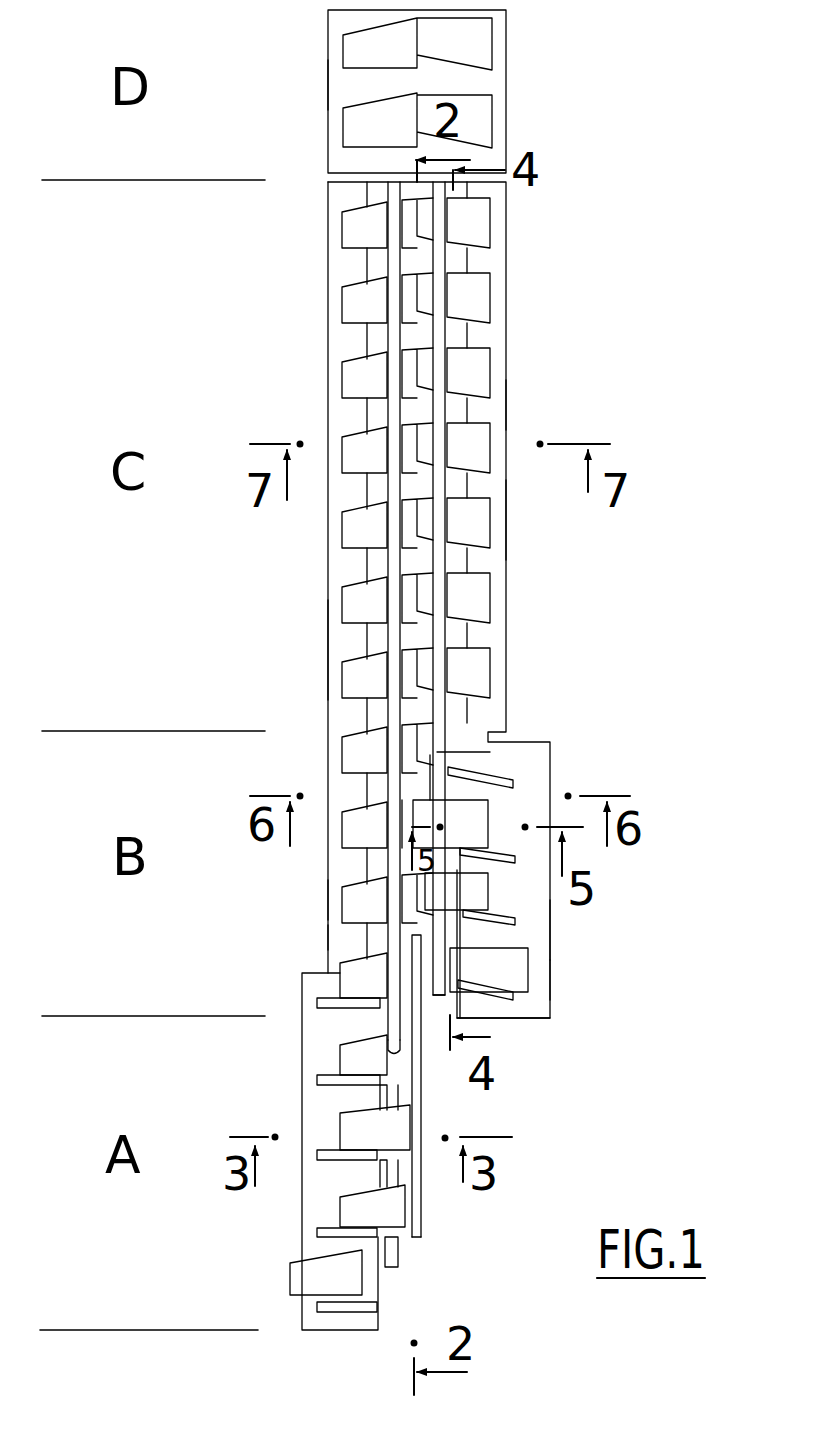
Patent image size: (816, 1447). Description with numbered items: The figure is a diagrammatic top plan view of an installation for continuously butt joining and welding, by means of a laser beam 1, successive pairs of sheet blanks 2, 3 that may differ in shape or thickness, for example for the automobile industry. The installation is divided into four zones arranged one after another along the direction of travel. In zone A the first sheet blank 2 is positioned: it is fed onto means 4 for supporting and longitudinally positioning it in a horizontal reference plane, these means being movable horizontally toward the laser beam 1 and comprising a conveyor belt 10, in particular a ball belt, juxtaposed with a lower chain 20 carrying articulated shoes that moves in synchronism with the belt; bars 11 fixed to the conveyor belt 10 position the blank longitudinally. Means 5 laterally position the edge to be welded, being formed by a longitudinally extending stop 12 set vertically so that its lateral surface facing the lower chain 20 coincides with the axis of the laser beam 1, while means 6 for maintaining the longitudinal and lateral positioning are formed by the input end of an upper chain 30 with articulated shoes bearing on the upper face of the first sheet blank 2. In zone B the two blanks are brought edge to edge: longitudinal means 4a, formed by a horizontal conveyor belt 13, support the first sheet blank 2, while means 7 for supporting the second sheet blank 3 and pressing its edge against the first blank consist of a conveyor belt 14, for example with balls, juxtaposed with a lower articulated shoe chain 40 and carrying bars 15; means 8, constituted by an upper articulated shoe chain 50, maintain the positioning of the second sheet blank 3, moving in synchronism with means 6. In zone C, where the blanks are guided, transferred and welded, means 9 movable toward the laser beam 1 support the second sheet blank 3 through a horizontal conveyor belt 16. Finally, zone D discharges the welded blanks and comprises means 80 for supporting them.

The laser beam 1 is at (415, 370).
The first sheet blank 2 is at (345, 1128).
The second sheet blank 3 is at (470, 900).
The means for supporting and longitudinally positioning the first sheet blank 4 is at (326, 554).
The longitudinal means for supporting the first sheet blank 4a is at (326, 910).
The means for laterally positioning the edge to be welded 5 is at (424, 1105).
The means for maintaining longitudinal and lateral relative positioning of the first 6 is at (386, 341).
The means for longitudinally supporting the second sheet blank 7 is at (553, 963).
The means for maintaining longitudinal and lateral relative positioning of the secon 8 is at (450, 561).
The means for longitudinally supporting the second sheet blank in zone C 9 is at (508, 520).
The conveyor belt 10 is at (302, 1243).
The bars 11 is at (318, 1079).
The longitudinally extending stop 12 is at (420, 1188).
The horizontal conveyor belt 13 is at (340, 648).
The conveyor belt 14 is at (540, 933).
The bars 15 is at (490, 994).
The horizontal conveyor belt 16 is at (500, 403).
The lower chain 20 is at (398, 1255).
The upper chain 30 is at (398, 1040).
The lower articulated shoe chain 40 is at (438, 985).
The upper articulated shoe chain 50 is at (437, 752).
The means for supporting the welded sheet blanks 80 is at (326, 86).